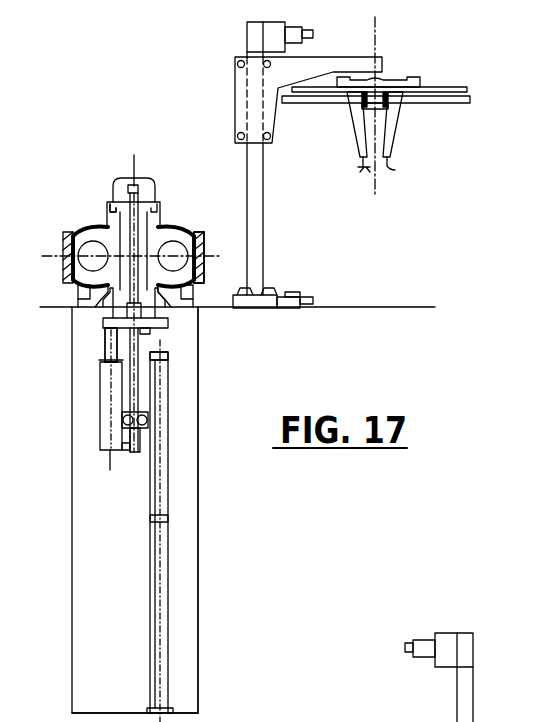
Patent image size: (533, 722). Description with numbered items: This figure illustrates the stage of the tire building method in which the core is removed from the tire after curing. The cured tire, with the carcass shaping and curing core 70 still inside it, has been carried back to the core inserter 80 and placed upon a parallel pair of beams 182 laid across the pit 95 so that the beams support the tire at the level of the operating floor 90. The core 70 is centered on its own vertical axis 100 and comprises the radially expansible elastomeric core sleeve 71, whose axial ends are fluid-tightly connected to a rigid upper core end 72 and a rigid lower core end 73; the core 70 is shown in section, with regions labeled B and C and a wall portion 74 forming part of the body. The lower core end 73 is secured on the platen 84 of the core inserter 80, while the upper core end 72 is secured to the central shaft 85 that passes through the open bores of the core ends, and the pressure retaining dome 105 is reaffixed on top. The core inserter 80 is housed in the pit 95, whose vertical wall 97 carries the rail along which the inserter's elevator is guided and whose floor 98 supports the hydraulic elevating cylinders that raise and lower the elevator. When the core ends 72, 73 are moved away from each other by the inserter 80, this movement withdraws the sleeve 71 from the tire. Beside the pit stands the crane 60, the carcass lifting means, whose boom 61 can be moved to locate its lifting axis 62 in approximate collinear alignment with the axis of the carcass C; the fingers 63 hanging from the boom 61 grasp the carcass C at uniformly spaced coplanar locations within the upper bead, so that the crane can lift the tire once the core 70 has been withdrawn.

The crane 60 is at (310, 127).
The boom 61 is at (330, 64).
The lifting axis 62 is at (378, 41).
The fingers 63 is at (389, 165).
The carcass shaping and curing core 70 is at (133, 240).
The core sleeve 71 is at (206, 271).
The upper core end 72 is at (112, 208).
The lower core end 73 is at (165, 303).
The body wall 74 is at (173, 257).
The core inserter 80 is at (175, 470).
The platen 84 is at (103, 322).
The central shaft 85 is at (140, 232).
The operating floor 90 is at (372, 307).
The pit 95 is at (126, 619).
The vertical wall 97 is at (197, 618).
The floor of the pit 98 is at (105, 712).
The vertical axis 100 is at (140, 172).
The pressure retaining dome 105 is at (118, 183).
The beams 182 is at (82, 300).
The left lobe B is at (203, 245).
The carcass C is at (167, 237).